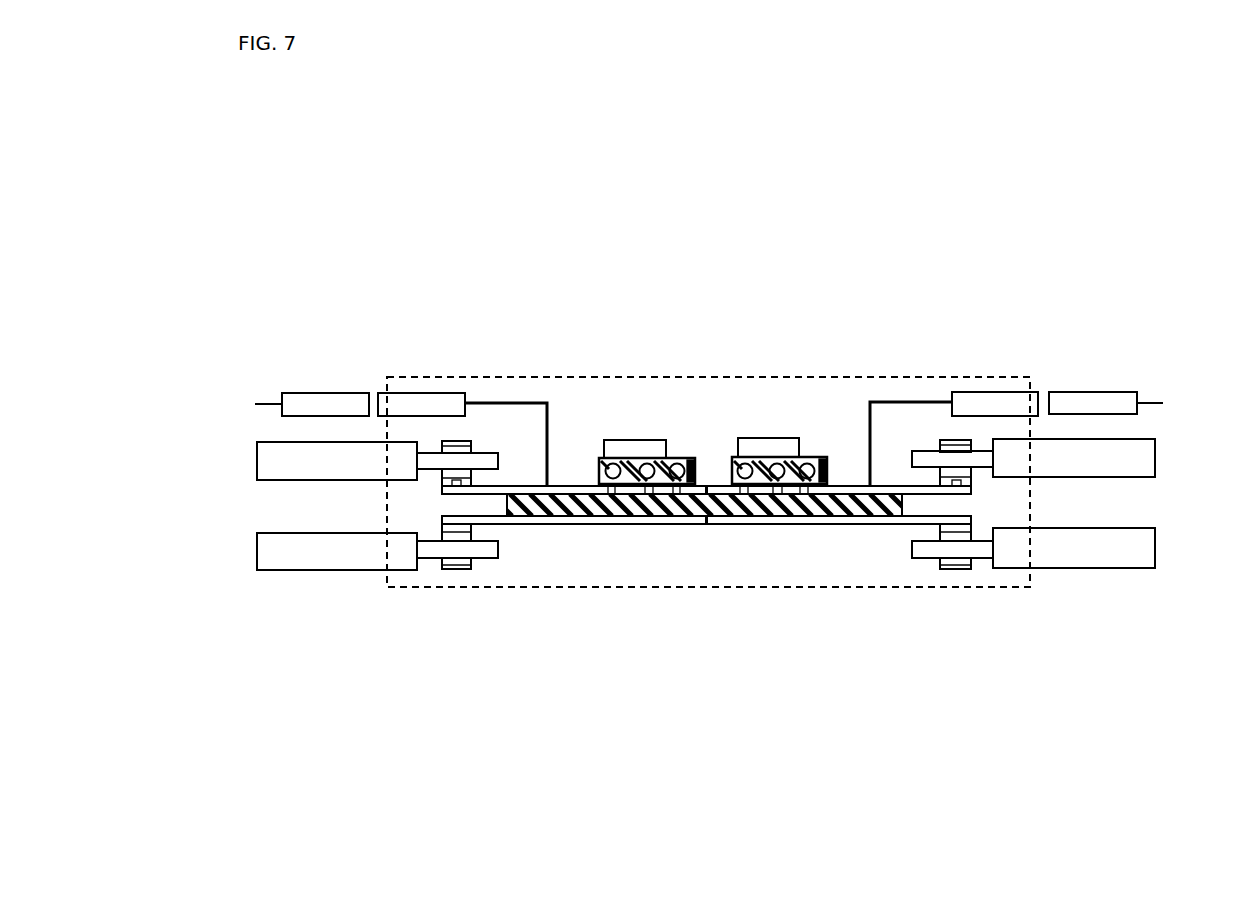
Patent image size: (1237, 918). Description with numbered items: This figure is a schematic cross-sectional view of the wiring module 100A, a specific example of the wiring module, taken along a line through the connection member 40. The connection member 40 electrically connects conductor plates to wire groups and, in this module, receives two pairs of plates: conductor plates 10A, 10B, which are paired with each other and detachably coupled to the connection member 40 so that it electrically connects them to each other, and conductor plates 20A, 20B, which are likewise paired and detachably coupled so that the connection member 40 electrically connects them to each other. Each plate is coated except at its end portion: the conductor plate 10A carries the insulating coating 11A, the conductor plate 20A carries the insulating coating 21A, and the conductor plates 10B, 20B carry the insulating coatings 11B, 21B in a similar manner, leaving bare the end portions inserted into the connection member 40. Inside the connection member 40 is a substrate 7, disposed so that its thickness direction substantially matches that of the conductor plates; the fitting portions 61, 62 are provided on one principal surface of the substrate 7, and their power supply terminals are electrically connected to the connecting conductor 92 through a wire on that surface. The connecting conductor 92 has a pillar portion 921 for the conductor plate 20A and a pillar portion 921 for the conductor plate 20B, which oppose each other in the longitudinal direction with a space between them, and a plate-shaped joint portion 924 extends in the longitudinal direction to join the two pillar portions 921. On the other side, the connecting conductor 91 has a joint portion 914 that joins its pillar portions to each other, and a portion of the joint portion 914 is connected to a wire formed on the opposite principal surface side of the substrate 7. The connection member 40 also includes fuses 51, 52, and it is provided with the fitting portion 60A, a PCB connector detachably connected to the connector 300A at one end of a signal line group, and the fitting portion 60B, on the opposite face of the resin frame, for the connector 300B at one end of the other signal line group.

The wiring module 100A is at (897, 307).
The connection member 40 is at (928, 390).
The connector 300A is at (333, 398).
The connector 300B is at (1115, 397).
The fitting portion 60A is at (407, 398).
The fitting portion 60B is at (994, 397).
The insulating coating 21A is at (298, 470).
The insulating coating 21B is at (1126, 466).
The insulating coating 11A is at (298, 566).
The insulating coating 11B is at (1126, 560).
The conductor plate 10A is at (430, 570).
The conductor plate 10B is at (985, 570).
The conductor plate 20A is at (493, 459).
The conductor plate 20B is at (920, 457).
The pillar portion 921 is at (457, 490).
The joint portion 924 is at (712, 487).
The joint portion 914 is at (733, 524).
The connecting conductor 91 is at (795, 524).
The connecting conductor 92 is at (848, 487).
The substrate 7 is at (863, 518).
The fuse 51 is at (638, 447).
The fuse 52 is at (778, 447).
The fitting portion 61 is at (683, 457).
The fitting portion 62 is at (817, 457).